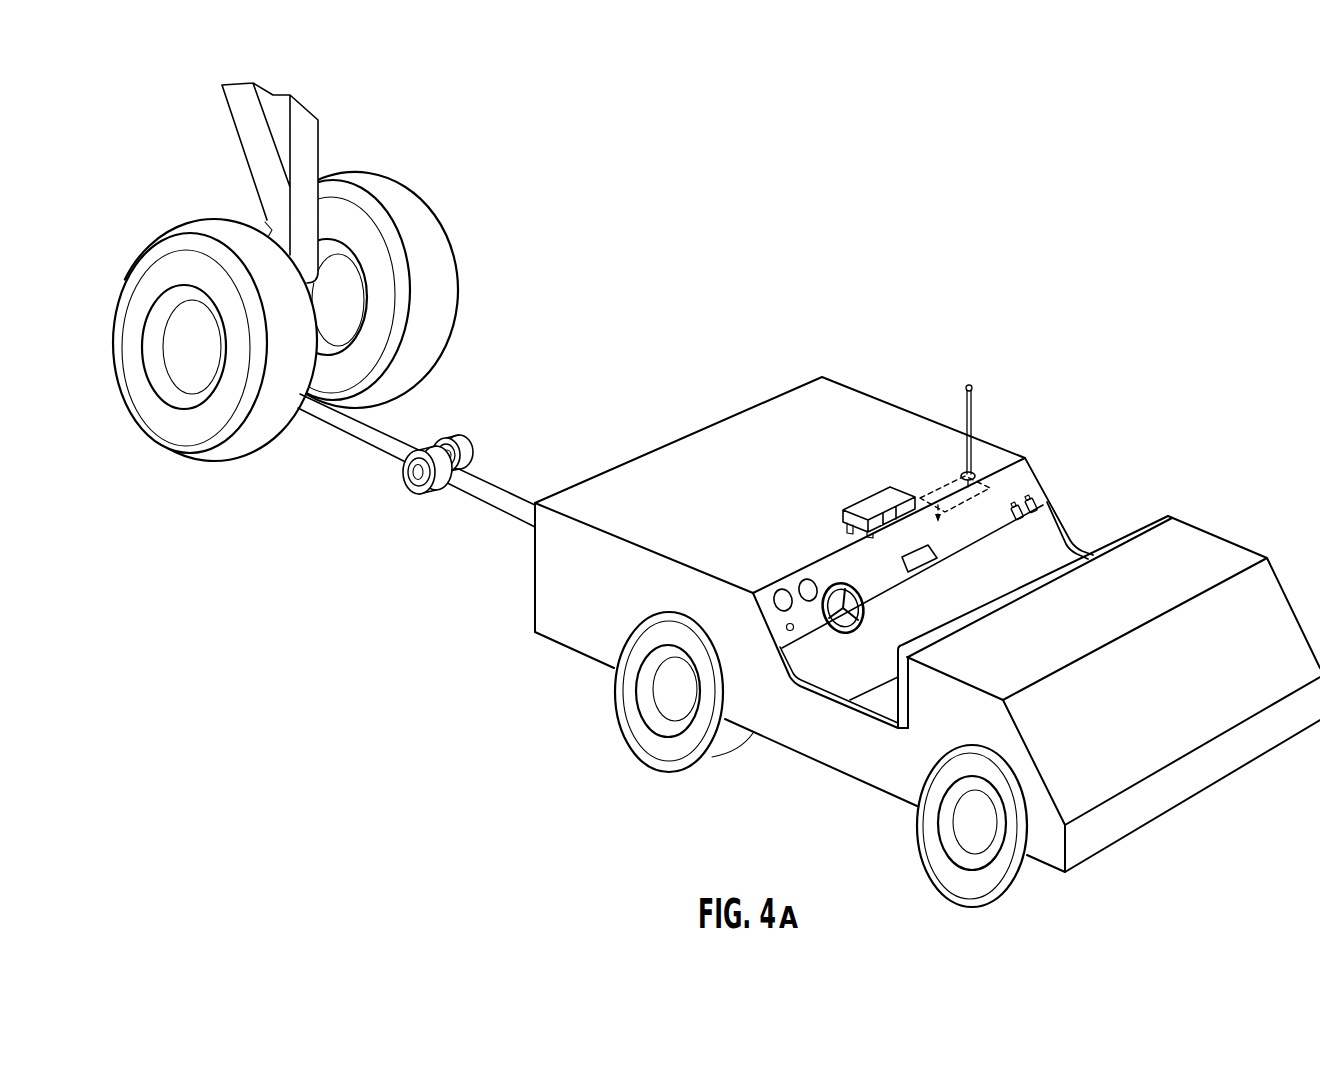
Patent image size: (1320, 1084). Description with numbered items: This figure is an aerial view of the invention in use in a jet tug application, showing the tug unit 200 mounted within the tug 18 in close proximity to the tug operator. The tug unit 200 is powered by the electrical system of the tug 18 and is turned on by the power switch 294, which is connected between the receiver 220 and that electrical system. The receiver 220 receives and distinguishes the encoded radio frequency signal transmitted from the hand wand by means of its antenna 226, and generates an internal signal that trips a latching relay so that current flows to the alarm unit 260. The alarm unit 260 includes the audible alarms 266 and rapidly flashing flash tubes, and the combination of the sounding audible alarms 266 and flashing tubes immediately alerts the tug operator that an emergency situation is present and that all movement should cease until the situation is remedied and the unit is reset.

The tug 18 is at (717, 423).
The tug unit 200 is at (882, 380).
The receiver 220 is at (990, 488).
The antenna 226 is at (966, 418).
The alarm unit 260 is at (885, 487).
The audible alarms 266 is at (927, 572).
The power switch 294 is at (1015, 505).